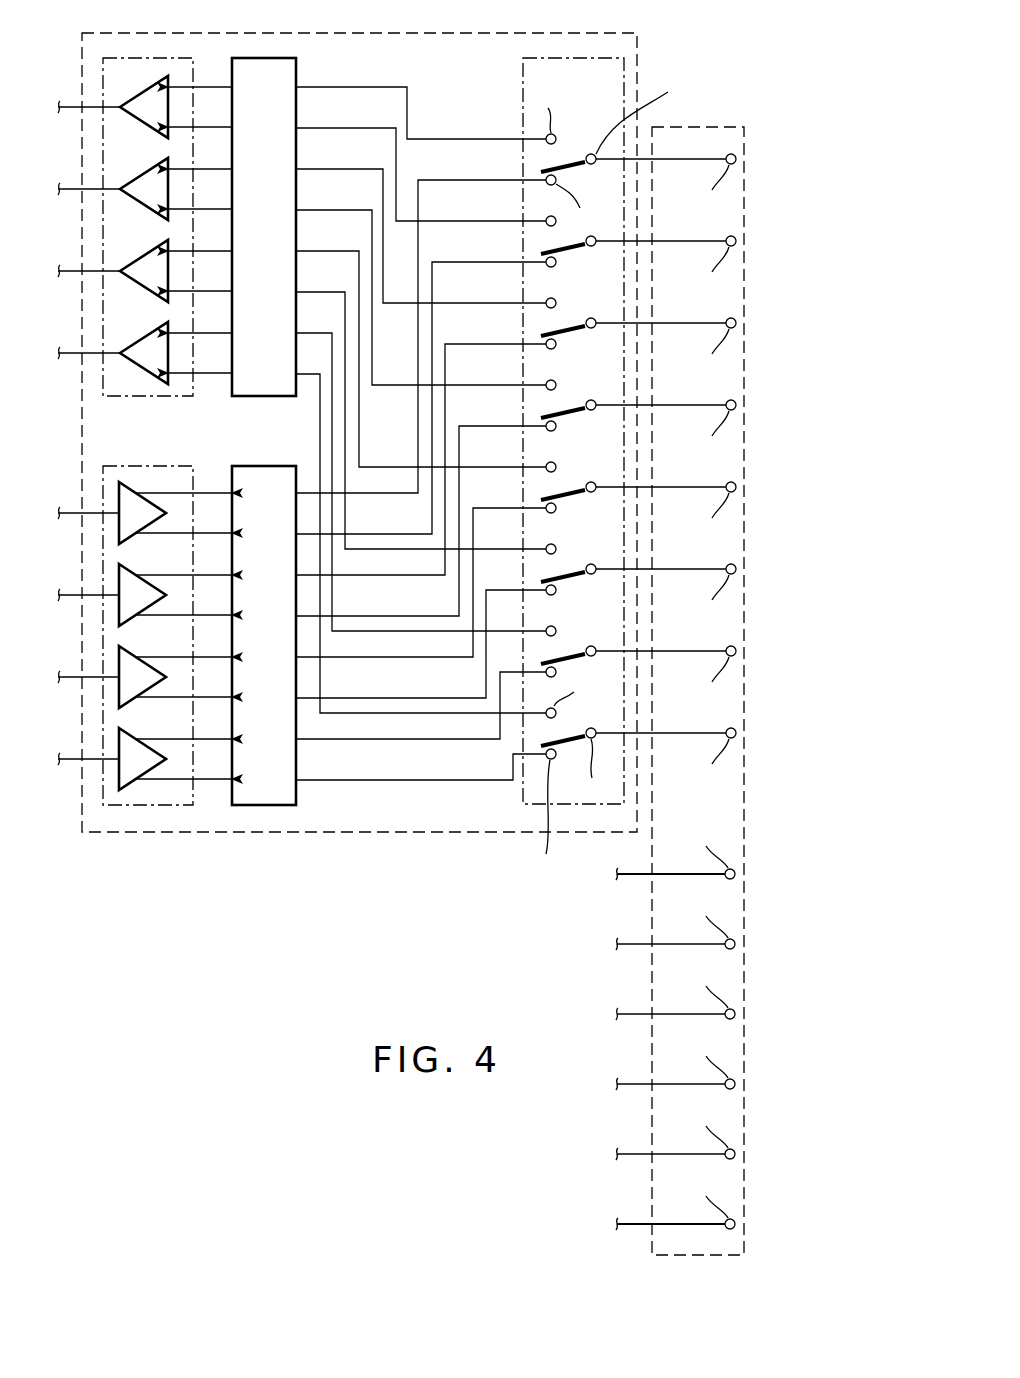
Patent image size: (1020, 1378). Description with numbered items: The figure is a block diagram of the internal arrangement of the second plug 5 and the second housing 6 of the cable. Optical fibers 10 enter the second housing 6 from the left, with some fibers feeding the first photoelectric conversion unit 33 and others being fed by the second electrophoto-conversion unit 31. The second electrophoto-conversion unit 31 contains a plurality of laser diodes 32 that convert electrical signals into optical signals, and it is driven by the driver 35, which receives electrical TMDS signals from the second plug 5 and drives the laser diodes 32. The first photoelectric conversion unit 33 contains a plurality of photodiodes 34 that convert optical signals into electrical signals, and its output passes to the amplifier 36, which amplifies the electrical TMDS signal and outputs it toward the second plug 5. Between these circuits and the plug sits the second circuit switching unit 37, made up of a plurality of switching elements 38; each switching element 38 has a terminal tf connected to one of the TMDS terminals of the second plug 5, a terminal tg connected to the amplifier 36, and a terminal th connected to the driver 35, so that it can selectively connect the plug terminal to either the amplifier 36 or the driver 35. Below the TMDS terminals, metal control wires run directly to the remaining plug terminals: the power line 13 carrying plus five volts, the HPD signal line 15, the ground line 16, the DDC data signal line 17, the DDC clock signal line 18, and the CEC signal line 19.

The second plug 5 is at (688, 1255).
The second housing 6 is at (362, 832).
The optical fibers 10 is at (66, 104).
The power line 13 is at (628, 880).
The HPD signal line 15 is at (628, 950).
The ground line 16 is at (628, 1020).
The DDC data signal line 17 is at (628, 1090).
The DDC clock signal line 18 is at (628, 1160).
The CEC signal line 19 is at (628, 1230).
The second electrophoto-conversion unit 31 is at (172, 58).
The laser diodes 32 is at (105, 168).
The first photoelectric conversion unit 33 is at (138, 805).
The photodiodes 34 is at (112, 578).
The driver 35 is at (265, 58).
The amplifier 36 is at (264, 805).
The second circuit switching unit 37 is at (565, 471).
The switching elements 38 is at (580, 128).